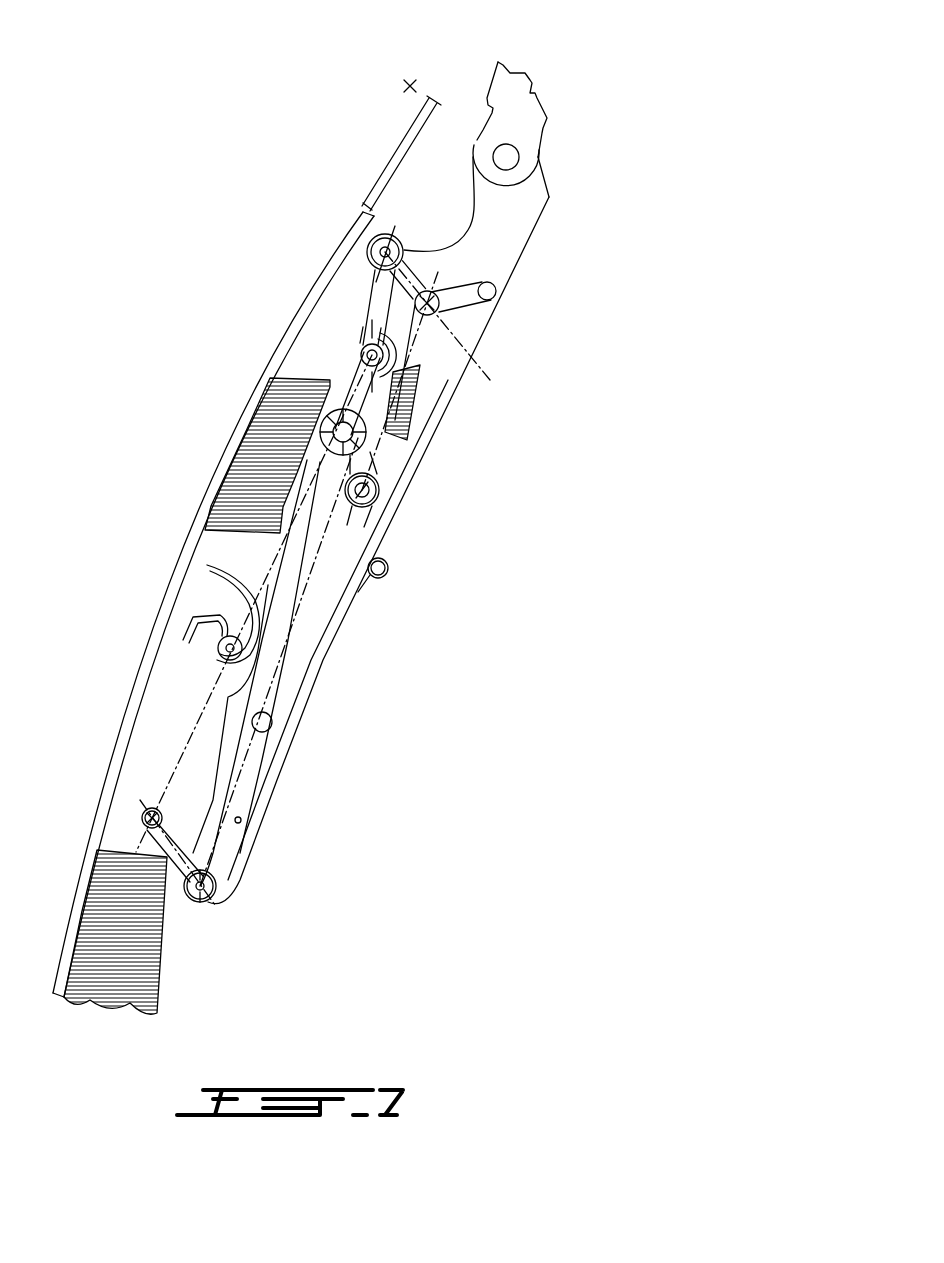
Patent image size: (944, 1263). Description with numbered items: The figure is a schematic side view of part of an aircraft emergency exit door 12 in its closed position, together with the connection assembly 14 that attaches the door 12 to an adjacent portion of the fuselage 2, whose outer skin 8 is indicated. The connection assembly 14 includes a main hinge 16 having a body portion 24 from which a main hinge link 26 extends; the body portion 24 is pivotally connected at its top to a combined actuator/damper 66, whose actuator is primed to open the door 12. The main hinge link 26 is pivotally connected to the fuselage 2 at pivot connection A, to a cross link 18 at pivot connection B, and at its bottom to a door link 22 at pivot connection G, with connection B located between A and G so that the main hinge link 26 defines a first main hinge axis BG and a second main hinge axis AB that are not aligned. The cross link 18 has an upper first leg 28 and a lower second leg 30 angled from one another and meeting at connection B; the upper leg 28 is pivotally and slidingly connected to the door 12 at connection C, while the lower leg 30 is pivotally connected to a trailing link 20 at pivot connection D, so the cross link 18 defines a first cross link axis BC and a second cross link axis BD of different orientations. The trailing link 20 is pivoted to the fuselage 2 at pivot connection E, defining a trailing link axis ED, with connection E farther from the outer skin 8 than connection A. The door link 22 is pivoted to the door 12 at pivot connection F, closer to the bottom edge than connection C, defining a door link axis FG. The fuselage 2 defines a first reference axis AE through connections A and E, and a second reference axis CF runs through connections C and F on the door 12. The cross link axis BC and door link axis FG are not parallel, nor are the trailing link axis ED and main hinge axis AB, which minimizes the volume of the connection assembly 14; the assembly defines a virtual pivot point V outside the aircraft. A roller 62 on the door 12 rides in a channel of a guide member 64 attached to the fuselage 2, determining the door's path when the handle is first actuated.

The fuselage 2 is at (401, 119).
The virtual pivot point V is at (410, 80).
The outer skin 8 is at (397, 150).
The door 12 is at (94, 322).
The connection assembly 14 is at (508, 722).
The main hinge 16 is at (443, 447).
The cross link 18 is at (360, 352).
The trailing link 20 is at (468, 274).
The door link 22 is at (170, 862).
The body portion 24 is at (518, 196).
The main hinge link 26 is at (312, 630).
The first leg 28 is at (331, 374).
The second leg 30 is at (343, 476).
The roller 62 is at (224, 614).
The guide member 64 is at (183, 627).
The combined actuator/damper 66 is at (518, 105).
The pivot connection A is at (378, 238).
The pivot connection B is at (338, 428).
The connection C is at (368, 342).
The pivot connection D is at (380, 492).
The pivot connection E is at (440, 306).
The pivot connection F is at (141, 815).
The pivot connection G is at (200, 903).
The second main hinge axis AB is at (360, 272).
The first reference axis AE is at (490, 362).
The first cross link axis BC is at (412, 406).
The second cross link axis BD is at (386, 513).
The first main hinge axis BG is at (244, 792).
The second reference axis CF is at (184, 724).
The trailing link axis ED is at (424, 372).
The door link axis FG is at (230, 907).